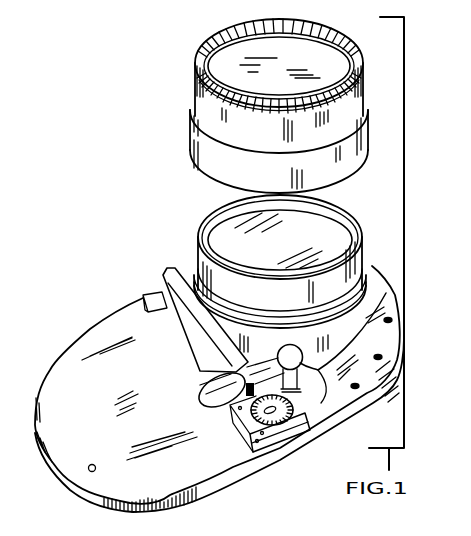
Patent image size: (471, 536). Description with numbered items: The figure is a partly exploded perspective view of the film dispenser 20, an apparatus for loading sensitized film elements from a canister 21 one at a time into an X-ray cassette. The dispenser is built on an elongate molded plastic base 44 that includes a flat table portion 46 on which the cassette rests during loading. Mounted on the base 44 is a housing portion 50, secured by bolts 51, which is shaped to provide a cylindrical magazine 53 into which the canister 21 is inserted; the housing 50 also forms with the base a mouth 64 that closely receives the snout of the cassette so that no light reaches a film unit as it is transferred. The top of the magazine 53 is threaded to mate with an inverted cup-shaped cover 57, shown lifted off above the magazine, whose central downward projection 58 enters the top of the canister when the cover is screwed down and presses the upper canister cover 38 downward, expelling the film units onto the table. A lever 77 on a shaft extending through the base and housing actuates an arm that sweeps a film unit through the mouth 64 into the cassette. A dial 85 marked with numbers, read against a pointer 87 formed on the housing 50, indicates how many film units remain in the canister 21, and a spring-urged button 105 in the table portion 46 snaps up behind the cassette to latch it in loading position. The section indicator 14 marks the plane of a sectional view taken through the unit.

The film dispenser 20 is at (95, 322).
The canister 21 is at (204, 217).
The upper canister cover 38 is at (324, 212).
The base 44 is at (226, 482).
The table portion 46 is at (50, 374).
The housing portion 50 is at (367, 293).
The bolts 51 is at (358, 390).
The magazine 53 is at (361, 267).
The cover 57 is at (196, 59).
The projection 58 is at (291, 47).
The mouth 64 is at (152, 300).
The lever 77 is at (283, 356).
The dial 85 is at (290, 424).
The pointer 87 is at (250, 432).
The button 105 is at (98, 468).
The section line 14 is at (173, 251).